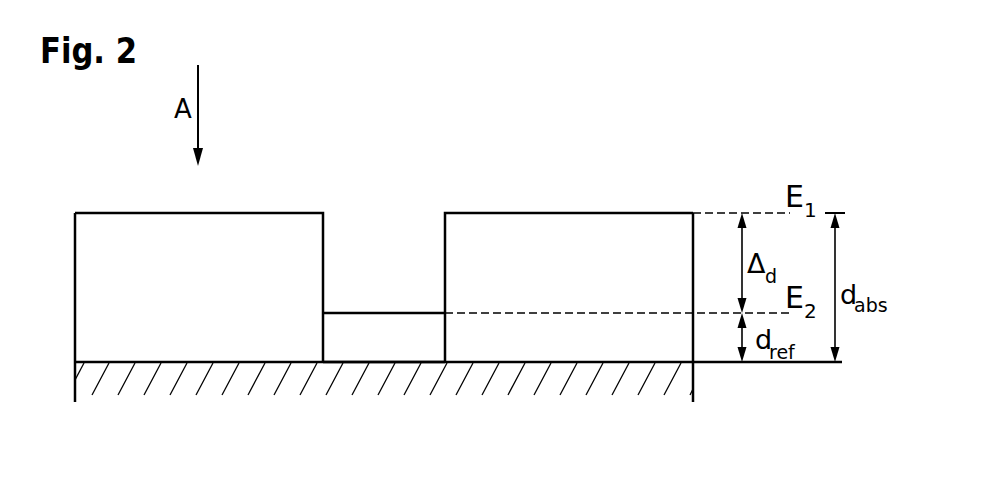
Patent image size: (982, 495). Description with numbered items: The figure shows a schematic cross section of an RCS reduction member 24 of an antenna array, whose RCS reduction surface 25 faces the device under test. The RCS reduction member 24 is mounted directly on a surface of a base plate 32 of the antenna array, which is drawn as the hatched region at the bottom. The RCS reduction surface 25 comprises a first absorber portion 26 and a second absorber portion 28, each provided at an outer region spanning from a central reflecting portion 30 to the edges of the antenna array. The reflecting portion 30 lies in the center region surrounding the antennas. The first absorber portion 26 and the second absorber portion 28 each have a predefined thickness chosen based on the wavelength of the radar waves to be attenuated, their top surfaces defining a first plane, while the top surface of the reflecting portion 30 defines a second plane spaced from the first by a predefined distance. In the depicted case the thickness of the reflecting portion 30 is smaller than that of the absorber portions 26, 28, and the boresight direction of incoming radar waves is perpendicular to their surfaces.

The RCS reduction member 24 is at (381, 216).
The RCS reduction surface 25 is at (381, 216).
The first absorber portion 26 is at (259, 230).
The second absorber portion 28 is at (620, 232).
The reflecting portion 30 is at (408, 345).
The base plate 32 is at (243, 387).